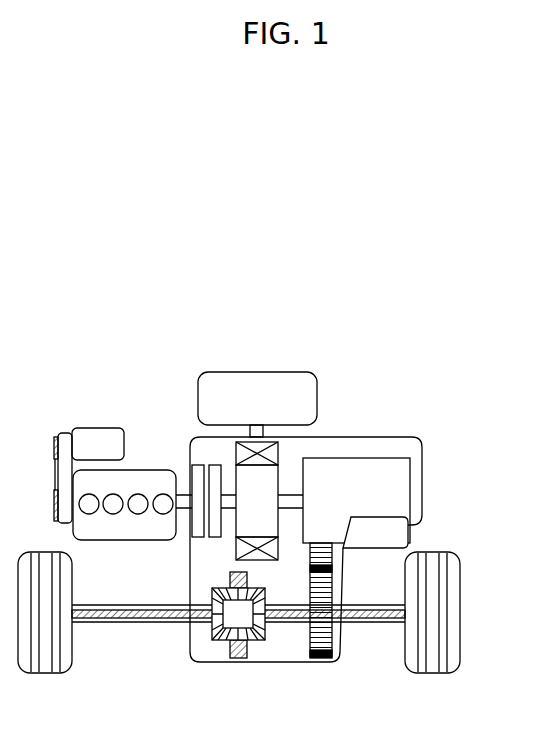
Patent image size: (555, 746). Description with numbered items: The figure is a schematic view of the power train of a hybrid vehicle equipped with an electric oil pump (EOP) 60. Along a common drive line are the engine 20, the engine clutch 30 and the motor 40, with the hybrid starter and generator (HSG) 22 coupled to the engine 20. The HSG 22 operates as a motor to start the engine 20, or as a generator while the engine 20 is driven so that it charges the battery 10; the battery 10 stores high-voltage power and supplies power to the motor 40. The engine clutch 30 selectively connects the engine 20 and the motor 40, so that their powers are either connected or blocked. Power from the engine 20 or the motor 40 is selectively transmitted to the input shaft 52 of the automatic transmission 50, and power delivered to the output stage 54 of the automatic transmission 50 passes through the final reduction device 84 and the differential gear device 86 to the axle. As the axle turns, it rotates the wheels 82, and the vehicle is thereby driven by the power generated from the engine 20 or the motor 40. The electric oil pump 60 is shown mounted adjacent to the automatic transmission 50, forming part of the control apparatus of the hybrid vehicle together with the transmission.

The battery 10 is at (256, 372).
The engine 20 is at (125, 540).
The hybrid starter and generator (HSG) 22 is at (96, 428).
The engine clutch 30 is at (192, 461).
The motor 40 is at (236, 538).
The automatic transmission 50 is at (357, 457).
The input shaft 52 is at (290, 495).
The output stage 54 is at (310, 560).
The electric oil pump (EOP) 60 is at (381, 548).
The wheels 82 is at (45, 673).
The final reduction device 84 is at (325, 658).
The differential gear device 86 is at (222, 641).